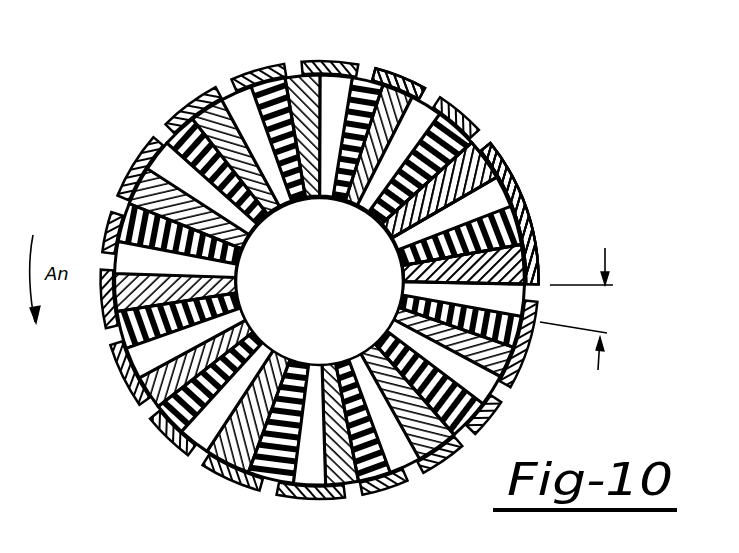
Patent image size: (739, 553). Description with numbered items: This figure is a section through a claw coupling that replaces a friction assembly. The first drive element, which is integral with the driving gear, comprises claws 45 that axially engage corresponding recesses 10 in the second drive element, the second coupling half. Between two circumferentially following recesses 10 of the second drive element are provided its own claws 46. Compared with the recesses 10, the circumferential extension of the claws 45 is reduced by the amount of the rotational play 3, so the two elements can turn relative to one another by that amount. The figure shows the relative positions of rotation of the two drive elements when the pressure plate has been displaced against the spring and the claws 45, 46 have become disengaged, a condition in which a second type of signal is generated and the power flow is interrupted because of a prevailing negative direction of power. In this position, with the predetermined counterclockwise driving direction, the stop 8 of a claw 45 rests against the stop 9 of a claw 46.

The recess 10 is at (481, 209).
The claw 45 is at (478, 136).
The claw 46 is at (417, 88).
The stop 9 is at (538, 234).
The stop 8 is at (538, 273).
The rotational play 3 is at (584, 309).